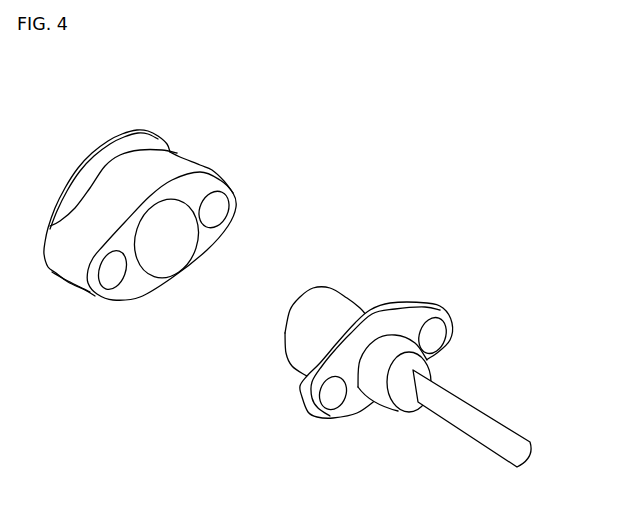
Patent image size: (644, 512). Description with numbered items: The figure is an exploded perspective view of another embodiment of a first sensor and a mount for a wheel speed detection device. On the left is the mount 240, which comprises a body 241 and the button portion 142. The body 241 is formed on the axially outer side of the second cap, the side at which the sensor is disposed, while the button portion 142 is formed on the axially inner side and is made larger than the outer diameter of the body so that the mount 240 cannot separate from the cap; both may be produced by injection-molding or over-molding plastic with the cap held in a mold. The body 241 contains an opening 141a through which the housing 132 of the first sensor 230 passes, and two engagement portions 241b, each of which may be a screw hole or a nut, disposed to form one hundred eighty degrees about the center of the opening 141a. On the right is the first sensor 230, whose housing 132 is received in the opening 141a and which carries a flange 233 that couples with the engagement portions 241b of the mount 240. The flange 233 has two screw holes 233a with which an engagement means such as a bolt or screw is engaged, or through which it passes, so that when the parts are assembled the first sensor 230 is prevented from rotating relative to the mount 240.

The mount 240 is at (170, 203).
The body 241 is at (200, 171).
The button portion 142 is at (137, 140).
The opening 141a is at (171, 242).
The engagement portions 241b is at (220, 213).
The first sensor 230 is at (369, 343).
The housing 132 is at (287, 338).
The flange 233 is at (375, 406).
The screw holes 233a is at (334, 401).